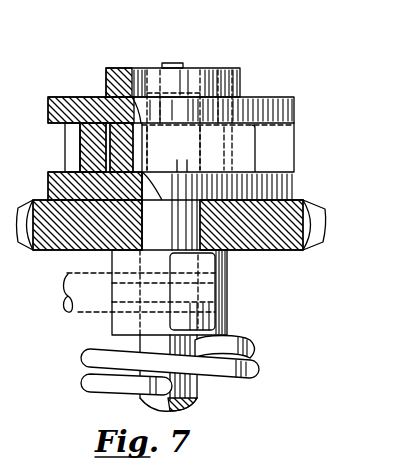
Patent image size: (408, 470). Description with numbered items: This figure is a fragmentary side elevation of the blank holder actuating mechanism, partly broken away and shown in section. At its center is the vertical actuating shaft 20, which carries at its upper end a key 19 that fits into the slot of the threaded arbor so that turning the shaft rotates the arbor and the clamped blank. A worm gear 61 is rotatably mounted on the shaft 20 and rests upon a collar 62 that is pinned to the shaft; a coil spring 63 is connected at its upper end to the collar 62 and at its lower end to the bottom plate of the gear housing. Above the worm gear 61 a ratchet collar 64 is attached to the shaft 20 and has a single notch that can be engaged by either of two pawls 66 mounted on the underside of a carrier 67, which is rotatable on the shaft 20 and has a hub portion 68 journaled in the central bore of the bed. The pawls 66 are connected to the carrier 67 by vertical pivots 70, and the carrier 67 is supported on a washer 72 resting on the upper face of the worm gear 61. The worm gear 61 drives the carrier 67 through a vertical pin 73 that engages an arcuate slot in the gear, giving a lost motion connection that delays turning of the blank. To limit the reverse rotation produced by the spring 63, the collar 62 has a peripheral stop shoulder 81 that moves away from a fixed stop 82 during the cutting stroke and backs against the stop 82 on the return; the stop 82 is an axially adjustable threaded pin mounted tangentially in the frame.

The key 19 is at (170, 63).
The actuating shaft 20 is at (193, 391).
The worm gear 61 is at (52, 247).
The collar 62 is at (222, 273).
The coil spring 63 is at (250, 341).
The ratchet collar 64 is at (112, 147).
The pawls 66 is at (252, 137).
The carrier 67 is at (252, 100).
The hub portion 68 is at (239, 73).
The vertical pivots 70 is at (86, 96).
The washer 72 is at (48, 182).
The vertical pin 73 is at (268, 148).
The peripheral stop shoulder 81 is at (170, 313).
The fixed stop 82 is at (76, 315).